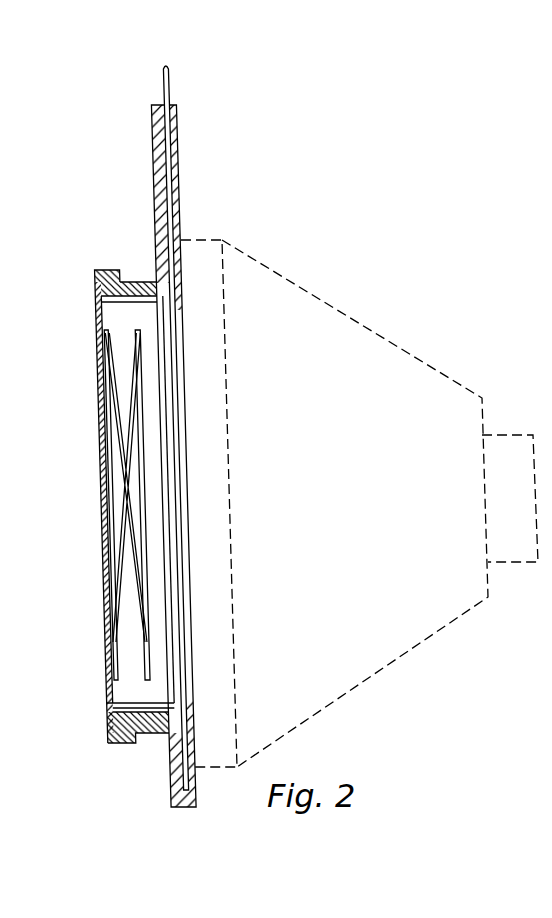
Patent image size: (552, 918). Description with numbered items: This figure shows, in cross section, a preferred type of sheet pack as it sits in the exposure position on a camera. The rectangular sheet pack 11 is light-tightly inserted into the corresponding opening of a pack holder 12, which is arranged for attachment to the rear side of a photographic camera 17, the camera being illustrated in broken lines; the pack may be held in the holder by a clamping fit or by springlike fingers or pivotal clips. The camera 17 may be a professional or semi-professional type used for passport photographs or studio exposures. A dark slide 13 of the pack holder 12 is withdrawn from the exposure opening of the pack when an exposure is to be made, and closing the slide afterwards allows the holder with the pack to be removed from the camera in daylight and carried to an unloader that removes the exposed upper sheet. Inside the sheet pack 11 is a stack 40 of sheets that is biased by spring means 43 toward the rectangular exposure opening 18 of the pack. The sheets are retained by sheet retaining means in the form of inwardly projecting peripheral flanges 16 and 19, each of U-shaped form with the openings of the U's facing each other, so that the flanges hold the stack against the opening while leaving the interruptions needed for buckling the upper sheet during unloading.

The sheet pack 11 is at (97, 270).
The pack holder 12 is at (150, 283).
The dark slide 13 is at (171, 89).
The peripheral flange 16 is at (103, 307).
The photographic camera 17 is at (325, 320).
The exposure opening 18 is at (180, 465).
The peripheral flange 19 is at (110, 706).
The stack of sheets 40 is at (158, 520).
The spring means 43 is at (140, 602).